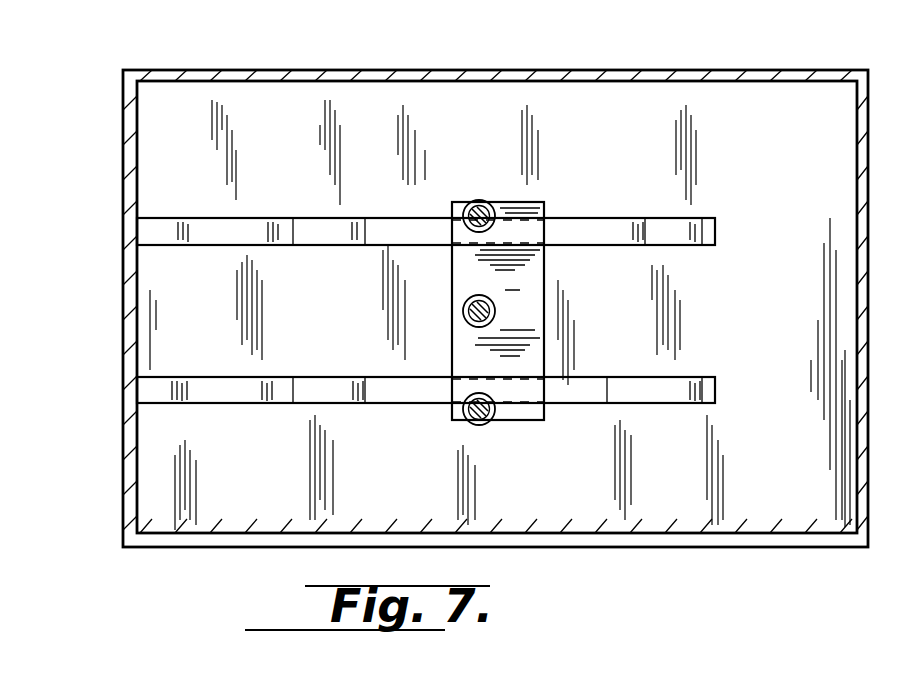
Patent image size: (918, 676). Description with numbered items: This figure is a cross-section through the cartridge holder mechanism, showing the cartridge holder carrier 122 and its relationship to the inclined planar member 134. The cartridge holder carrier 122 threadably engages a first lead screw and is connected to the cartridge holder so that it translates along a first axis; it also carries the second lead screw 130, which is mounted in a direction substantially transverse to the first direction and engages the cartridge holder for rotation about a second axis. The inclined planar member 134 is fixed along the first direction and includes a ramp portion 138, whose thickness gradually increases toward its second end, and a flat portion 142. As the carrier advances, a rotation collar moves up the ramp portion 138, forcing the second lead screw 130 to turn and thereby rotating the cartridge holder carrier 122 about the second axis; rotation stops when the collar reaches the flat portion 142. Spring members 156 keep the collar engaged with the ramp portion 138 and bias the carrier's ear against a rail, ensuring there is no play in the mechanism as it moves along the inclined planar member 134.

The cartridge holder carrier 122 is at (545, 298).
The second lead screw 130 is at (465, 304).
The inclined planar member 134 is at (273, 218).
The ramp portion 138 is at (700, 403).
The flat portion 142 is at (197, 388).
The spring member 156 is at (479, 199).